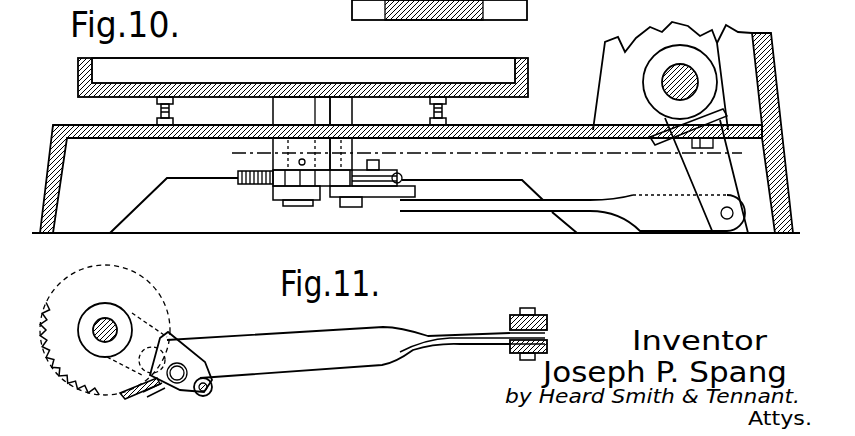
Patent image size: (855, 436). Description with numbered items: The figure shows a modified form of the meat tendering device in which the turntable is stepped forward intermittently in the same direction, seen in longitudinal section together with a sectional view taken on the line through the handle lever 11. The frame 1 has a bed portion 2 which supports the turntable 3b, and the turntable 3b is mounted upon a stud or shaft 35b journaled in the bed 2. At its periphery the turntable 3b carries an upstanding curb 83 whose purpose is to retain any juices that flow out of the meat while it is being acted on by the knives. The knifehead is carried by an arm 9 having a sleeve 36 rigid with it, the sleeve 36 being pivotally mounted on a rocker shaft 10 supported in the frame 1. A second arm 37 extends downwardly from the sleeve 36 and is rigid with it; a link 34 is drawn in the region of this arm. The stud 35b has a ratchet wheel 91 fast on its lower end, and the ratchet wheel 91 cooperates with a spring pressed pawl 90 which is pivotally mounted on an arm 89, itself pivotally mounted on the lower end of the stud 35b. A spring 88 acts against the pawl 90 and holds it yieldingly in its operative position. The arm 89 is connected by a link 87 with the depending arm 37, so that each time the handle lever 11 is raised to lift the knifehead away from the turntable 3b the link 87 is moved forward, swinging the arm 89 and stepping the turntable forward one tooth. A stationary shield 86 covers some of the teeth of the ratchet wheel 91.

In FIG. 10, the frame 1 is at (773, 78).
In FIG. 10, the bed portion 2 is at (122, 139).
In FIG. 10, the turntable 3b is at (482, 86).
In FIG. 10, the arm 9 is at (623, 58).
In FIG. 10, the rocker shaft 10 is at (668, 73).
In FIG. 10, the handle lever 11 is at (492, 157).
In FIG. 10, the link 34 is at (653, 132).
In FIG. 10, the stud or shaft 35b is at (292, 112).
In FIG. 11, the stud or shaft 35b is at (112, 315).
In FIG. 10, the sleeve 36 is at (690, 70).
In FIG. 10, the second arm 37 is at (693, 167).
In FIG. 11, the second arm 37 is at (550, 343).
In FIG. 10, the upstanding curb 83 is at (78, 67).
In FIG. 10, the stationary shield 86 is at (332, 182).
In FIG. 11, the stationary shield 86 is at (143, 392).
In FIG. 10, the link 87 is at (672, 218).
In FIG. 11, the link 87 is at (319, 361).
In FIG. 10, the spring 88 is at (393, 175).
In FIG. 11, the spring 88 is at (200, 397).
In FIG. 10, the arm 89 is at (401, 190).
In FIG. 11, the arm 89 is at (168, 355).
In FIG. 10, the spring pressed pawl 90 is at (355, 170).
In FIG. 11, the spring pressed pawl 90 is at (152, 396).
In FIG. 10, the ratchet wheel 91 is at (250, 185).
In FIG. 11, the ratchet wheel 91 is at (90, 392).